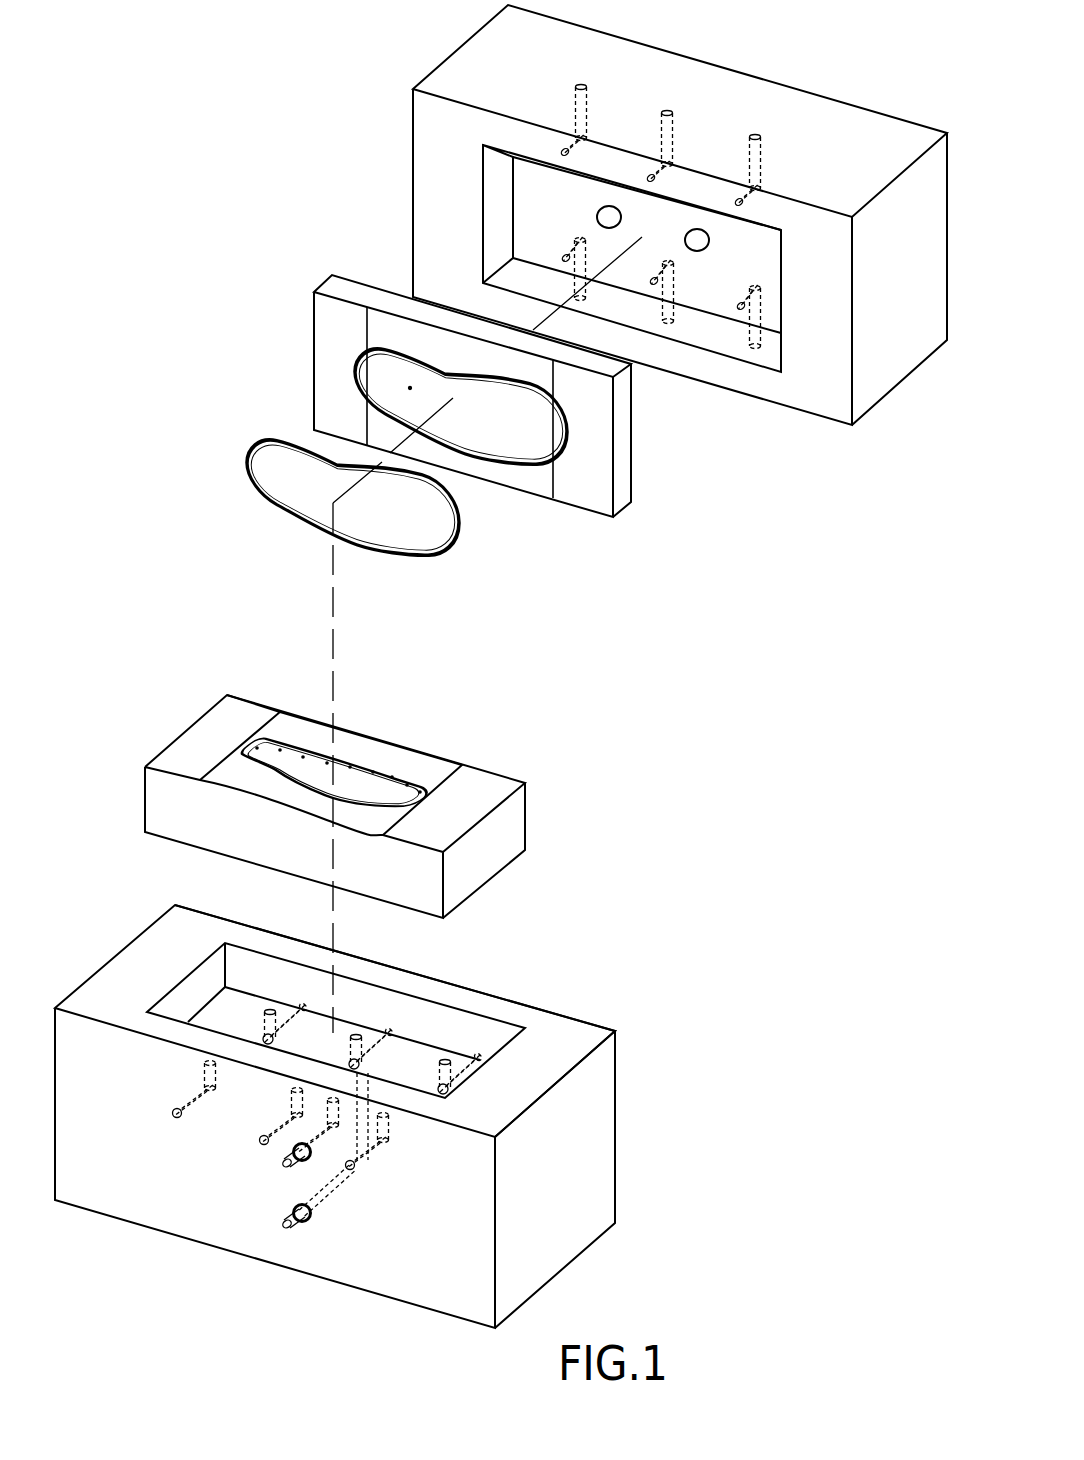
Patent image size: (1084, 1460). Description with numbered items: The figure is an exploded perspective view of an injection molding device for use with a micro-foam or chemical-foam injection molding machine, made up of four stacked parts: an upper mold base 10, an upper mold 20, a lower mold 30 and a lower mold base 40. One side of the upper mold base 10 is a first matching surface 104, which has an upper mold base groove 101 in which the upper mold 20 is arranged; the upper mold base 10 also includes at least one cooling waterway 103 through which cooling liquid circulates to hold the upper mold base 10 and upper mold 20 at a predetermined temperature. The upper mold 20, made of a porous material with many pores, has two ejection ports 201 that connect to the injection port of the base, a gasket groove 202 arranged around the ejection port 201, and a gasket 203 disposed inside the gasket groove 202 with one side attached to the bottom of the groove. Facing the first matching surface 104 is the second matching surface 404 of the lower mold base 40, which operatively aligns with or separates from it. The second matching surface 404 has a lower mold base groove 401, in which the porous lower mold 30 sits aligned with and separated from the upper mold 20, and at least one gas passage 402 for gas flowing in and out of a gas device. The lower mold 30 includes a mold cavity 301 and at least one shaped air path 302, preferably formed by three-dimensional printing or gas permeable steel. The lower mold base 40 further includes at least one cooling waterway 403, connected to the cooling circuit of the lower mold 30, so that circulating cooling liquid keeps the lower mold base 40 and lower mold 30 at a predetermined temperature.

The upper mold base 10 is at (636, 212).
The upper mold base groove 101 is at (757, 247).
The cooling waterway 103 is at (755, 137).
The first matching surface 104 is at (433, 168).
The upper mold 20 is at (463, 355).
The ejection port 201 is at (495, 415).
The gasket groove 202 is at (358, 362).
The gasket 203 is at (253, 447).
The lower mold 30 is at (361, 785).
The mold cavity 301 is at (258, 760).
The shaped air path 302 is at (392, 777).
The lower mold base 40 is at (390, 1102).
The lower mold base groove 401 is at (225, 1012).
The gas passage 402 is at (287, 1225).
The cooling waterway 403 is at (447, 1060).
The second matching surface 404 is at (562, 1055).